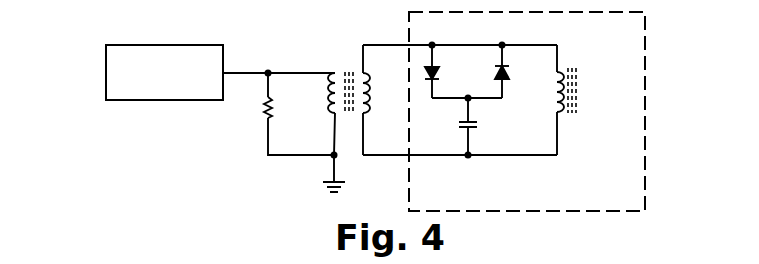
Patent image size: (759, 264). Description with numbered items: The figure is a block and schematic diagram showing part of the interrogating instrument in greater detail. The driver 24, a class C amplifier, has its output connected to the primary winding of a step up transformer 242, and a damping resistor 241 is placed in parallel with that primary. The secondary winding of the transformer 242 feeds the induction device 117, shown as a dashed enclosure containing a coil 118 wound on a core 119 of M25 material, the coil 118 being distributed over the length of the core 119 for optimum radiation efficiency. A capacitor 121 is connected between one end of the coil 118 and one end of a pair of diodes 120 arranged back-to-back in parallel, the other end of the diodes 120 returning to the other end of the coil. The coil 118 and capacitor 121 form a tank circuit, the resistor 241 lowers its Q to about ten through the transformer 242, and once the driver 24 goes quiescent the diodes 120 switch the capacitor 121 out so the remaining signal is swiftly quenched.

The driver 24 is at (106, 73).
The damping resistor 241 is at (263, 112).
The step up transformer 242 is at (348, 70).
The pair of diodes 120 is at (435, 67).
The capacitor 121 is at (477, 123).
The coil 118 is at (560, 113).
The core 119 is at (576, 97).
The induction device 117 is at (646, 100).